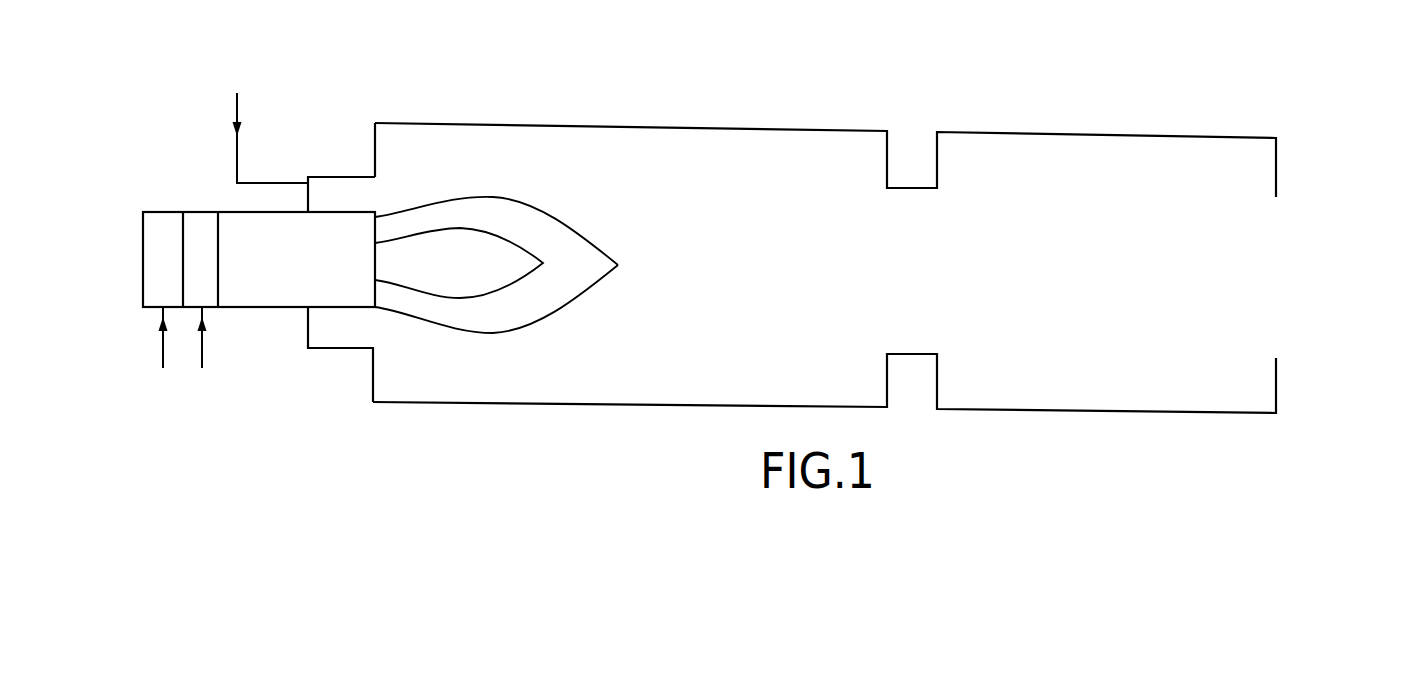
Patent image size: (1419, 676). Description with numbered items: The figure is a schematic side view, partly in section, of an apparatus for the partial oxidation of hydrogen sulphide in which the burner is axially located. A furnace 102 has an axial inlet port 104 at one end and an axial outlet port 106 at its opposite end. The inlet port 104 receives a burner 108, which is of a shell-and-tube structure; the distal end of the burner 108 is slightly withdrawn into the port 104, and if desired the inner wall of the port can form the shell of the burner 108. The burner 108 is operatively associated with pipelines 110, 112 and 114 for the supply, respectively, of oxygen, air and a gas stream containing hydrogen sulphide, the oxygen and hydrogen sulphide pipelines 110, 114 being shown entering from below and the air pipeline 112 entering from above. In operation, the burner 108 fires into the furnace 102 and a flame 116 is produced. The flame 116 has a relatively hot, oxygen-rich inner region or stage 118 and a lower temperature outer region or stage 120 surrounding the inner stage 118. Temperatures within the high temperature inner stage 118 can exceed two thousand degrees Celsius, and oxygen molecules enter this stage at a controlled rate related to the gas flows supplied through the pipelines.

The furnace 102 is at (663, 422).
The axial inlet port 104 is at (353, 342).
The axial outlet port 106 is at (1275, 273).
The burner 108 is at (198, 205).
The oxygen pipeline 110 is at (163, 368).
The air pipeline 112 is at (237, 93).
The hydrogen sulphide gas pipeline 114 is at (202, 368).
The flame 116 is at (472, 338).
The inner stage 118 is at (420, 252).
The outer stage 120 is at (537, 232).